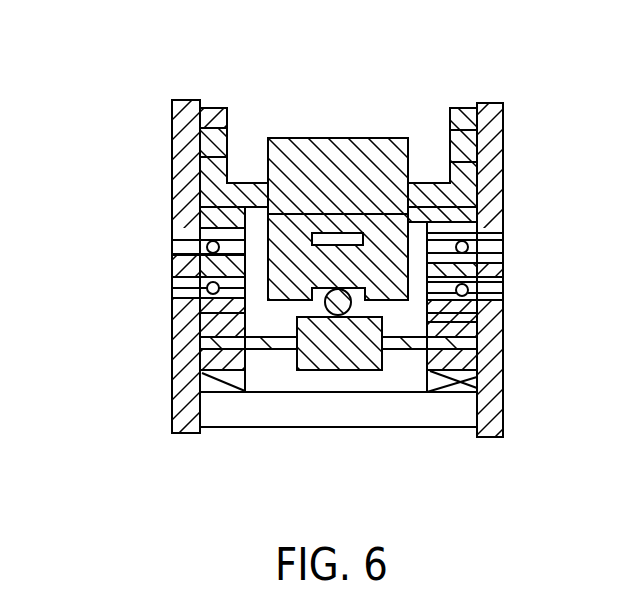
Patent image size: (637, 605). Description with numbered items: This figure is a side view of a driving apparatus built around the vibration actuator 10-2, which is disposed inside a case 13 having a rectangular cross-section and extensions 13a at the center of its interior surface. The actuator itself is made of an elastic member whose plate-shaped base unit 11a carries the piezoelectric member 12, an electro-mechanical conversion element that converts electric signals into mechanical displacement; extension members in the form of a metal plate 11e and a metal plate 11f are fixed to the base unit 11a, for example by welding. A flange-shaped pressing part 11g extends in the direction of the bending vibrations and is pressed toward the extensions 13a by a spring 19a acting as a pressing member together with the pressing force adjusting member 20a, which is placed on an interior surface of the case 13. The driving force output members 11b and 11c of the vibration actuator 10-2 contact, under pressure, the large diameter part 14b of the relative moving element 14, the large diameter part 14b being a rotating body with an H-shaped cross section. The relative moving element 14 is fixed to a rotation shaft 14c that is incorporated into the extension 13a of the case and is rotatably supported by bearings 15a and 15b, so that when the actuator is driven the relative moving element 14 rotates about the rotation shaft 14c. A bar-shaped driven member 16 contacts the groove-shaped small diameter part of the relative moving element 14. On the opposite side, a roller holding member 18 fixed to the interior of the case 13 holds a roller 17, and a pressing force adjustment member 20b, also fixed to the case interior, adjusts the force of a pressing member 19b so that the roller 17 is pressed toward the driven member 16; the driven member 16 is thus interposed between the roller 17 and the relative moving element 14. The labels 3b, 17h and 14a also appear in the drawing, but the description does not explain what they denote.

The vibration actuator 10-2 is at (361, 102).
The case 13 is at (178, 137).
The projection 3b is at (184, 160).
The pressing force adjusting member 20a is at (462, 124).
The metal plate 11e is at (248, 192).
The pressing part 11g is at (182, 183).
The metal plate 11f is at (428, 197).
The hole 17h is at (470, 188).
The piezoelectric member 12 is at (282, 155).
The elastic member base unit 11a is at (323, 170).
The relative moving element 14 is at (388, 250).
The driven member 16 is at (340, 310).
The extension 13a is at (212, 212).
The driving force output member 11c is at (265, 243).
The driving force output member 11b is at (318, 270).
The bearing 15a is at (182, 285).
The rotation shaft 14c is at (198, 313).
The roller holding member 18 is at (205, 345).
The right clamp portion 14a is at (470, 280).
The bearing 15b is at (495, 290).
The spring 19a is at (490, 150).
The pressing member 19b is at (485, 378).
The large diameter part 14b is at (335, 352).
The roller 17 is at (337, 353).
The pressing force adjustment member 20b is at (438, 413).